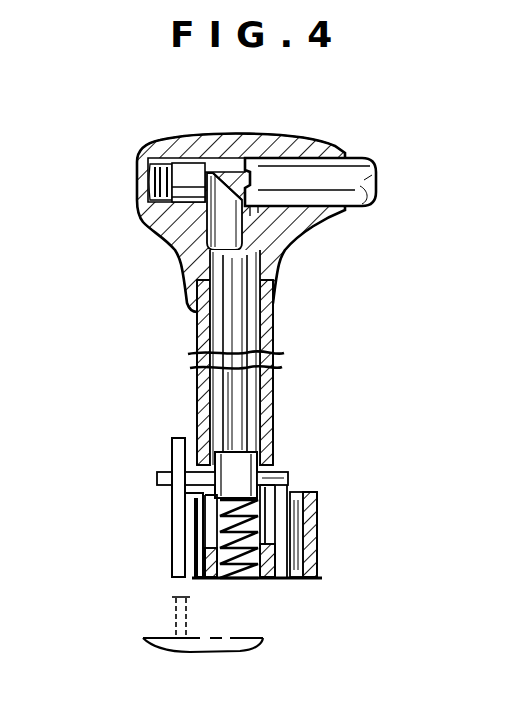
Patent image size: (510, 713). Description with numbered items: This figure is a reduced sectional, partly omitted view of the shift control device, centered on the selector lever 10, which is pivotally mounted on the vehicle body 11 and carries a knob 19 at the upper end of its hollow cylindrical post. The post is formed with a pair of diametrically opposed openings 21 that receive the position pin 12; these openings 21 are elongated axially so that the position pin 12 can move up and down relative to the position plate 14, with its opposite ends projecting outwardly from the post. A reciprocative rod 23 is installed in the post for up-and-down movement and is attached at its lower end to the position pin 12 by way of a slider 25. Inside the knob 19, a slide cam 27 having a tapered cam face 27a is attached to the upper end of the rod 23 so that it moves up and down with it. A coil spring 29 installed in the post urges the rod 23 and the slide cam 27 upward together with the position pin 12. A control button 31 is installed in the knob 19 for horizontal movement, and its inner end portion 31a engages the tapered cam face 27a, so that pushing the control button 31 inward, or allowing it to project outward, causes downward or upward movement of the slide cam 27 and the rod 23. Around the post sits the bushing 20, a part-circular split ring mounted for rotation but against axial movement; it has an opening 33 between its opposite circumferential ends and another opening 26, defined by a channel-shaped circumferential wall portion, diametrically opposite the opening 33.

The selector lever 10 is at (132, 191).
The vehicle body 11 is at (184, 646).
The position pin 12 is at (290, 478).
The position plate 14 is at (176, 497).
The knob 19 is at (306, 147).
The bushing 20 is at (317, 504).
The openings 21 is at (206, 517).
The reciprocative rod 23 is at (265, 418).
The slider 25 is at (233, 462).
The opening 26 is at (300, 553).
The slide cam 27 is at (225, 166).
The tapered cam face 27a is at (240, 182).
The coil spring 29 is at (245, 569).
The control button 31 is at (363, 206).
The inner end portion 31a is at (263, 192).
The opening 33 is at (196, 530).